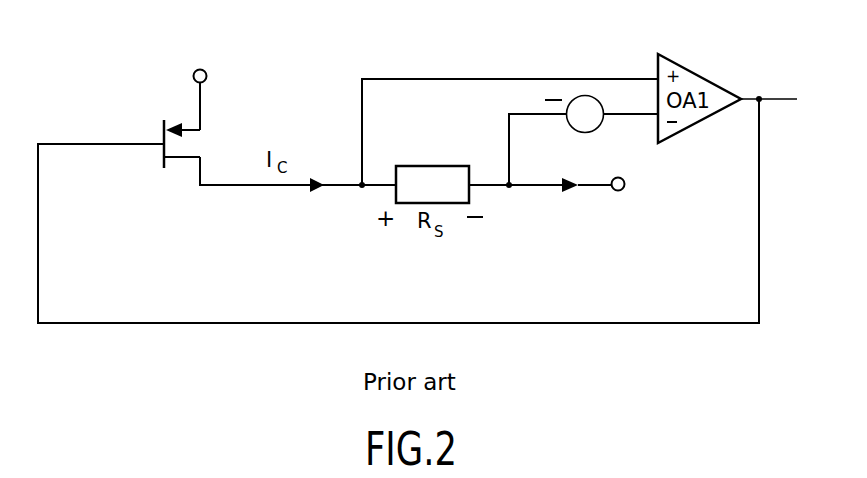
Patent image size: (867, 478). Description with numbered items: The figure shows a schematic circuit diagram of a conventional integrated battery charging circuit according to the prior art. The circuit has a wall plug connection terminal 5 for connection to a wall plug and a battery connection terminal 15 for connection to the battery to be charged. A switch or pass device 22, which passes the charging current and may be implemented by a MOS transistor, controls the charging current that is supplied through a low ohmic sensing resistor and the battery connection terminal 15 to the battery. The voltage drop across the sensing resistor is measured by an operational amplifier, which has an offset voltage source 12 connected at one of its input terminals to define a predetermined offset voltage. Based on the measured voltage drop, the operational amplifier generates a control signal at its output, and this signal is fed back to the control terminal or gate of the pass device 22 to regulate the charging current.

The wall plug connection terminal 5 is at (211, 96).
The pass device 22 is at (263, 147).
The offset voltage source 12 is at (585, 123).
The battery connection terminal 15 is at (611, 175).